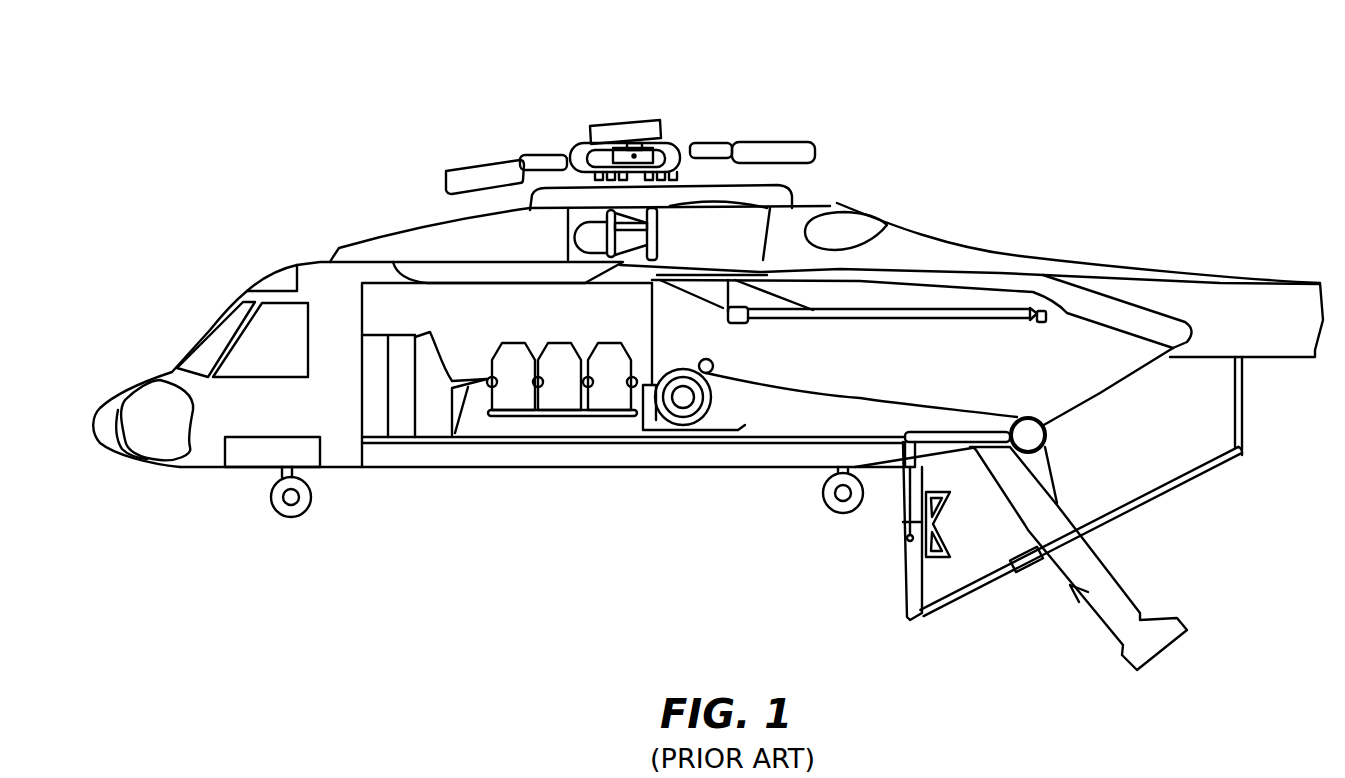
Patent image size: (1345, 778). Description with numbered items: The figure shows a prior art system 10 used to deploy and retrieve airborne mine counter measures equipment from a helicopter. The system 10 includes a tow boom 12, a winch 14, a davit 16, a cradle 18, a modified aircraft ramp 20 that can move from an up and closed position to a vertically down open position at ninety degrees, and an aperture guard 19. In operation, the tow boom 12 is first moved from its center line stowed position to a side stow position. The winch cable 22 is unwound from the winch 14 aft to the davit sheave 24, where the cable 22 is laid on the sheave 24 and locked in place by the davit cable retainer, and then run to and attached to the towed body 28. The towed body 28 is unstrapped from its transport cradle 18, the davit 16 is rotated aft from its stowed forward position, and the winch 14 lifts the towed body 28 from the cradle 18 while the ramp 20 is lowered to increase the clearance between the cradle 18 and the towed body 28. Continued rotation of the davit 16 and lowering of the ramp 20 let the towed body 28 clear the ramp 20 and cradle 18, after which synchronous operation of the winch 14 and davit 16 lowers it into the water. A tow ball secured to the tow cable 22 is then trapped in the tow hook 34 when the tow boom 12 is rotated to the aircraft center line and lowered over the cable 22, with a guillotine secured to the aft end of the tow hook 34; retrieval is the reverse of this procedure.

The system 10 is at (890, 165).
The tow boom 12 is at (933, 308).
The winch 14 is at (687, 408).
The davit 16 is at (950, 432).
The cradle 18 is at (938, 540).
The aperture guard 19 is at (1031, 565).
The modified aircraft ramp 20 is at (907, 607).
The winch cable 22 is at (826, 398).
The davit sheave 24 is at (1038, 418).
The towed body 28 is at (1120, 590).
The tow hook 34 is at (1041, 310).